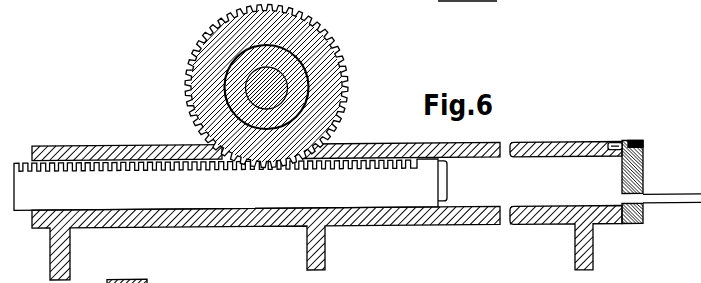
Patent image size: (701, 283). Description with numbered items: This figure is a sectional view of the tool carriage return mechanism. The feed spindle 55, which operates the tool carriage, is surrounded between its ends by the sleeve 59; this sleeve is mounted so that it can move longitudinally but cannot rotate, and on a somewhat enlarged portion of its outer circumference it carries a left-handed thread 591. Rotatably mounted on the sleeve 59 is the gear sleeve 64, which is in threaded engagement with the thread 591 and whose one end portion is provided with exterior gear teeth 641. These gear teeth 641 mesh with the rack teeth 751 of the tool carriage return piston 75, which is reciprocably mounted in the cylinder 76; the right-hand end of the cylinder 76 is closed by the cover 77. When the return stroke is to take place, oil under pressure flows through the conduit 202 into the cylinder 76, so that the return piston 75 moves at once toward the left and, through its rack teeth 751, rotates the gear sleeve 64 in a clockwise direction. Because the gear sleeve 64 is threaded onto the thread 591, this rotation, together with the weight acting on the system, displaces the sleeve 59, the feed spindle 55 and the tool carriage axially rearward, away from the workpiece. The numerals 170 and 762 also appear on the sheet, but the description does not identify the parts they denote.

The feed spindle 55 is at (243, 92).
The sleeve 59 is at (232, 112).
The thread 591 is at (299, 63).
The gear sleeve 64 is at (272, 86).
The gear teeth 641 is at (340, 97).
The tool carriage return piston 75 is at (226, 184).
The rack teeth 751 is at (232, 167).
The cylinder 76 is at (469, 181).
The cover 77 is at (632, 173).
The conduit 202 is at (657, 205).
The support 170 is at (447, 1).
The guide 762 is at (579, 5).